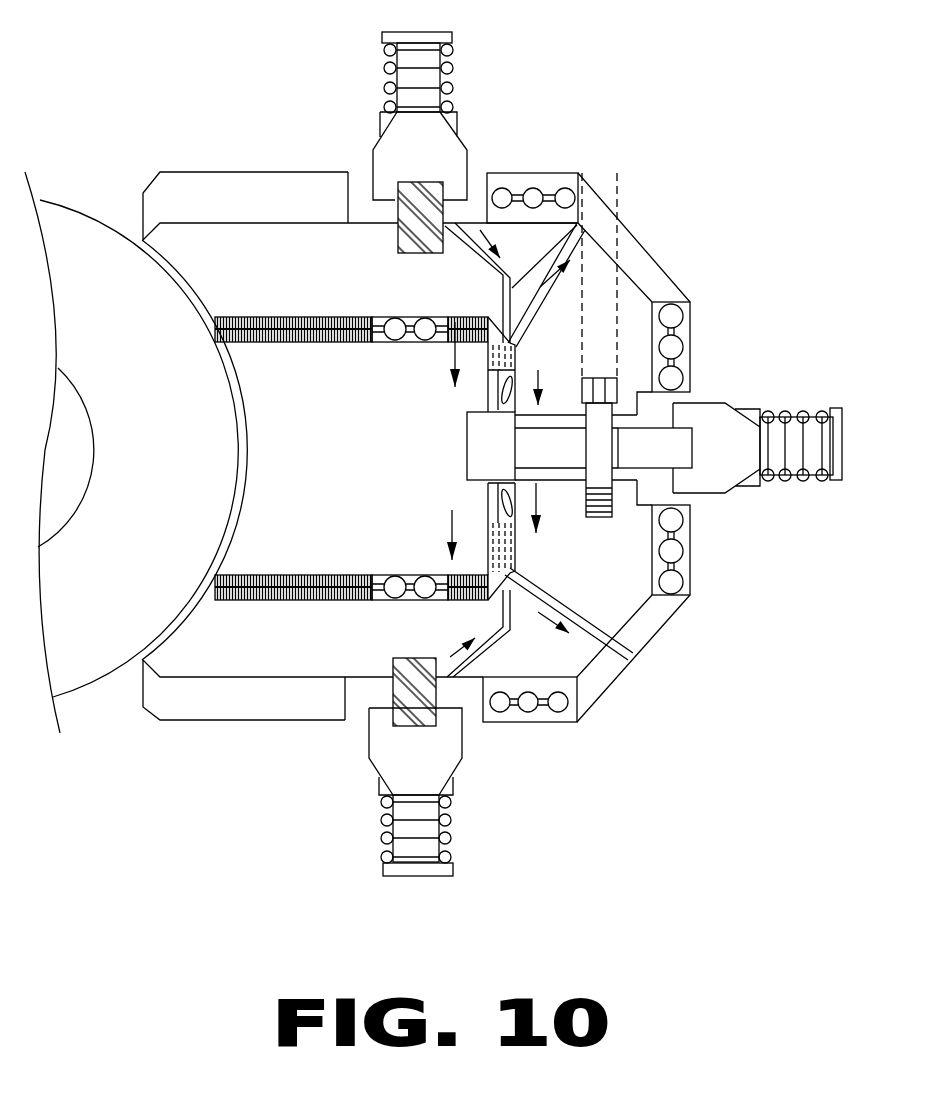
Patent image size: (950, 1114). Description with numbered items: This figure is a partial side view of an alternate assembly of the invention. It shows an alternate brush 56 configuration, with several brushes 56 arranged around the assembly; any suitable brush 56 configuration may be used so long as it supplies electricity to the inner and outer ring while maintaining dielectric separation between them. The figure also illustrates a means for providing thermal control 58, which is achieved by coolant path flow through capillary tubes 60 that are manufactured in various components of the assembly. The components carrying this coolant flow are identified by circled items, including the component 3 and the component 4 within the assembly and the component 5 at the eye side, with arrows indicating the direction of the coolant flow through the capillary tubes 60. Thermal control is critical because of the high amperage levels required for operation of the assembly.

The component with capillary tubes 5 is at (128, 231).
The brush 56 is at (397, 218).
The means for providing thermal control 58 is at (588, 103).
The capillary tubes 60 is at (590, 243).
The component with capillary tubes 3 is at (455, 320).
The component with capillary tubes 4 is at (500, 397).